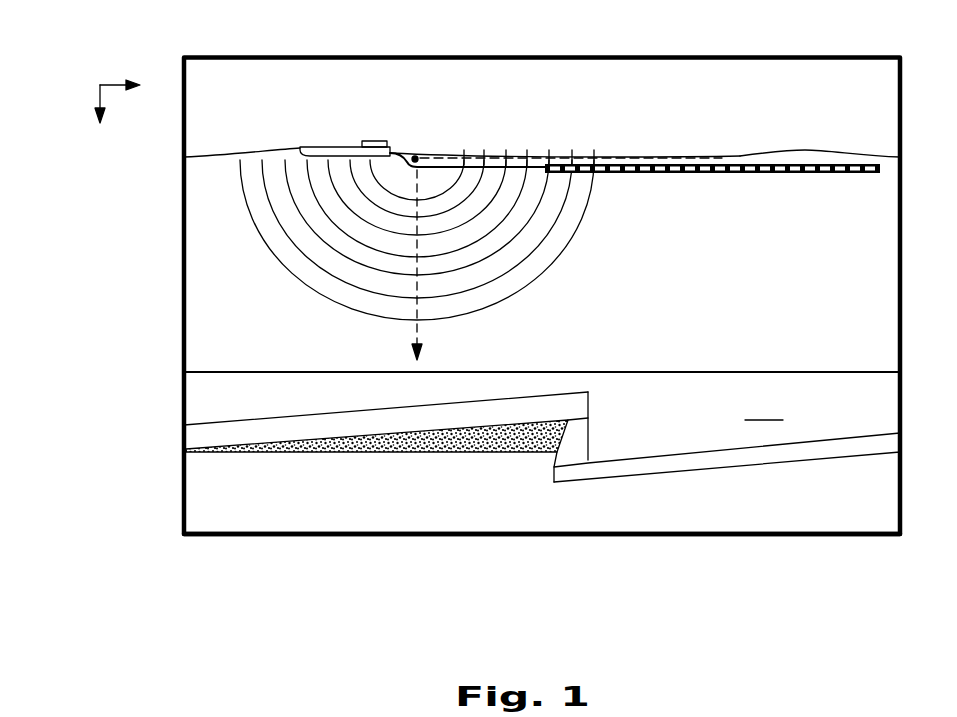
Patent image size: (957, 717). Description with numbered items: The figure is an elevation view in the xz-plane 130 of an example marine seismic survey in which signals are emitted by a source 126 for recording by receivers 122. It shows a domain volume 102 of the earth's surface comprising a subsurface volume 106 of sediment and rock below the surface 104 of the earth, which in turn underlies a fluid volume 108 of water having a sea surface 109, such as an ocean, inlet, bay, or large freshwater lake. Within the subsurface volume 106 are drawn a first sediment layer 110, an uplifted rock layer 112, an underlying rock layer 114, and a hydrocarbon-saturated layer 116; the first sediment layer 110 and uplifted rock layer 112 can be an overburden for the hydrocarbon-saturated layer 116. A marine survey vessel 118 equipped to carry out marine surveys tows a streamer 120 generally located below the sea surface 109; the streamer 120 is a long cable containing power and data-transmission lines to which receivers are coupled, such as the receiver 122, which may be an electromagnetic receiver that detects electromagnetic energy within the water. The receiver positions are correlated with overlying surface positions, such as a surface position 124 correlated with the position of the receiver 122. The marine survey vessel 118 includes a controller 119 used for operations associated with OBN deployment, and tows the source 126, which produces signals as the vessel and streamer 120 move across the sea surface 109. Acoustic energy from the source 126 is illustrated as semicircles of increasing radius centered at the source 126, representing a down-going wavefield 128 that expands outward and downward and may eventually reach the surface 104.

The domain volume 102 is at (127, 203).
The surface 104 is at (237, 372).
The subsurface volume 106 is at (207, 393).
The fluid volume 108 is at (207, 290).
The sea surface 109 is at (665, 155).
The first sediment layer 110 is at (764, 407).
The uplifted rock layer 112 is at (200, 442).
The underlying rock layer 114 is at (297, 525).
The hydrocarbon-saturated layer 116 is at (387, 452).
The marine survey vessel 118 is at (337, 147).
The controller 119 is at (380, 141).
The streamer 120 is at (708, 190).
The receiver 122 is at (813, 173).
The surface position 124 is at (815, 150).
The source 126 is at (415, 158).
The down-going wavefield 128 is at (565, 250).
The xz-plane 130 is at (100, 85).